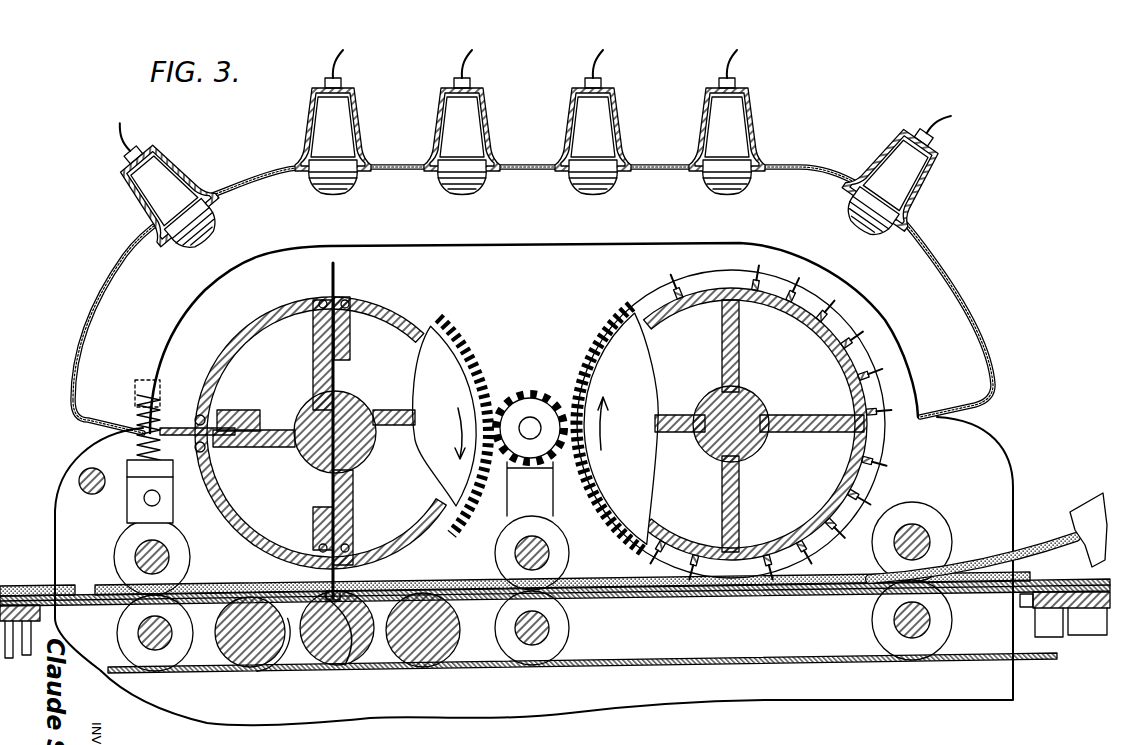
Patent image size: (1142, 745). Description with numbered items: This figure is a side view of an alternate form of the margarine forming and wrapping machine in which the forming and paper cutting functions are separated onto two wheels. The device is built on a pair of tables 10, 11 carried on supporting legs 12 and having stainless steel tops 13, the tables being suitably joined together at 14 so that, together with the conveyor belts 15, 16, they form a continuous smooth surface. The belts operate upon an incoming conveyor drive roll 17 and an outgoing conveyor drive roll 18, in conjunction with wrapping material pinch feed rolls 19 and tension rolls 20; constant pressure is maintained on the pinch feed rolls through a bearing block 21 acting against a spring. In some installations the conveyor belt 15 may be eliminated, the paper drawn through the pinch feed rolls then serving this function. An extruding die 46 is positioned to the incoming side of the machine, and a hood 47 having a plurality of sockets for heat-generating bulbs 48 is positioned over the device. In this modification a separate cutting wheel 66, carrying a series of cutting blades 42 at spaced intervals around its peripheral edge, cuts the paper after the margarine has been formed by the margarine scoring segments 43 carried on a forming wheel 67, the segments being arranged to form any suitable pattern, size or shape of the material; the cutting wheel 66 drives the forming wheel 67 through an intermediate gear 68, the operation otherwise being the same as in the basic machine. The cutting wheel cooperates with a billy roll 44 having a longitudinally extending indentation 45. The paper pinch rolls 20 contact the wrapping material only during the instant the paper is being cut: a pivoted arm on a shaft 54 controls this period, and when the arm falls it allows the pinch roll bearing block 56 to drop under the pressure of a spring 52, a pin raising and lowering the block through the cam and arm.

The table 10 is at (1097, 678).
The table 11 is at (24, 596).
The supporting legs 12 is at (13, 640).
The stainless steel tops 13 is at (8, 589).
The joint 14 is at (60, 598).
The conveyor belt 15 is at (658, 664).
The conveyor belt 16 is at (180, 672).
The incoming conveyor drive roll 17 is at (423, 649).
The outgoing conveyor drive roll 18 is at (247, 657).
The wrapping material pinch feed rolls 19 is at (558, 607).
The tension rolls 20 is at (182, 558).
The bearing block 21 is at (507, 512).
The cutting blades 42 is at (332, 276).
The margarine scoring segments 43 is at (655, 289).
The billy roll 44 is at (316, 654).
The indentation 45 is at (370, 652).
The extruding die 46 is at (1083, 508).
The hood 47 is at (526, 165).
The heat-generating bulbs 48 is at (222, 223).
The spring 52 is at (133, 464).
The shaft 54 is at (84, 470).
The pinch roll bearing block 56 is at (167, 502).
The cutting wheel 66 is at (398, 315).
The forming wheel 67 is at (742, 333).
The intermediate gear 68 is at (527, 386).